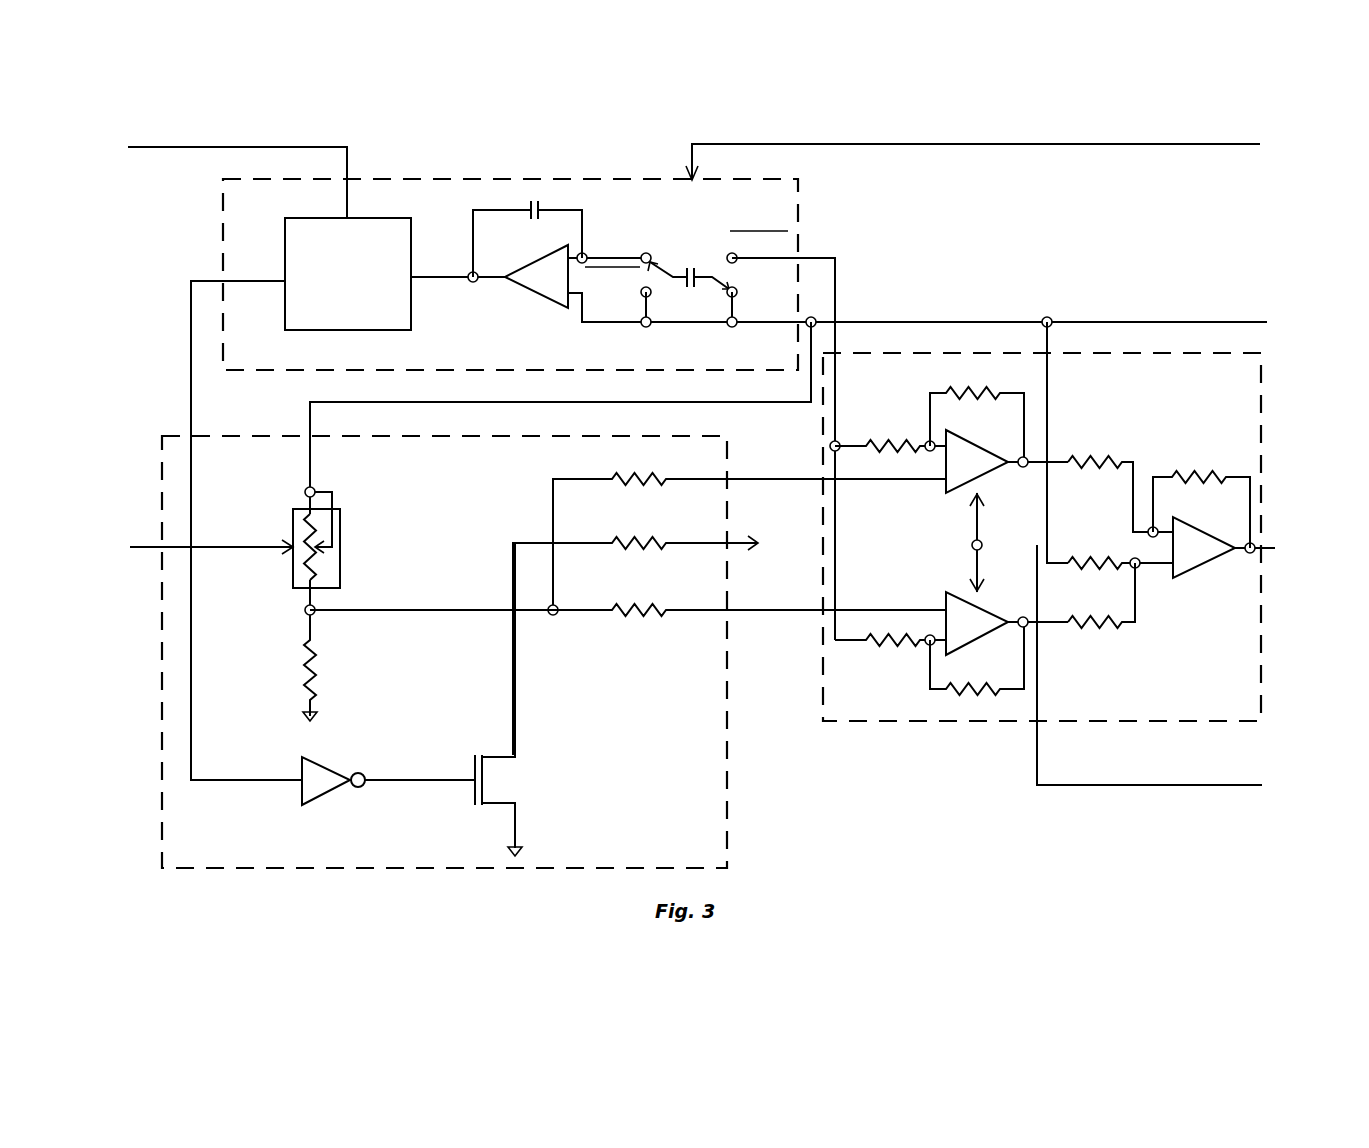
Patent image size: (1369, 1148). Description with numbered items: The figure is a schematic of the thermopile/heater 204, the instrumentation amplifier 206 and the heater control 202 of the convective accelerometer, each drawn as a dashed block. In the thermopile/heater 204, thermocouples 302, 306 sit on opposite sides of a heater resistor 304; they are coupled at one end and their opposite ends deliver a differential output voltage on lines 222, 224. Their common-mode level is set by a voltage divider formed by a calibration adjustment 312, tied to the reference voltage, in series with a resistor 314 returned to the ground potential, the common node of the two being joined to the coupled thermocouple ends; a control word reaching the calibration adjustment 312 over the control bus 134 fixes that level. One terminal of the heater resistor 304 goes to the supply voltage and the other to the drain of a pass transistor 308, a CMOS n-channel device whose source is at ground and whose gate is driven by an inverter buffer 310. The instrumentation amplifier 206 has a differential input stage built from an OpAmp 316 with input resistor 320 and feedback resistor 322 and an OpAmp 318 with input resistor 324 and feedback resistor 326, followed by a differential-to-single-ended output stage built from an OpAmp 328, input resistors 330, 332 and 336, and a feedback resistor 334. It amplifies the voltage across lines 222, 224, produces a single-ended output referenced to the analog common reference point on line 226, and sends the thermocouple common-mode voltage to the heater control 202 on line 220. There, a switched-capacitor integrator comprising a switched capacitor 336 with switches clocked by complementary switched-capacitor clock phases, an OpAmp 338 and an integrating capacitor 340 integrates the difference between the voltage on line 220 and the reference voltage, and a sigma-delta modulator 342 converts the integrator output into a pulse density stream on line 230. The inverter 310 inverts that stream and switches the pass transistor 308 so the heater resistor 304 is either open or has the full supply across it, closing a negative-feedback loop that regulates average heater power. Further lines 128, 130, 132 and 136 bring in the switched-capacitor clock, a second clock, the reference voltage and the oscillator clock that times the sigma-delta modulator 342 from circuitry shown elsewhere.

The line 128 (Ck_sc) 128 is at (1014, 157).
The line 130 (Ck_ca) 130 is at (1191, 692).
The line 132 (Vbs) 132 is at (1079, 332).
The control bus 134 is at (177, 562).
The line 136 (Ck_osc) 136 is at (204, 171).
The heater control circuit 202 is at (445, 172).
The thermopile/heater 204 is at (747, 833).
The instrumentation amplifier 206 is at (977, 722).
The line 220 is at (835, 297).
The line 222 is at (800, 479).
The line 224 is at (800, 610).
The line 226 is at (1289, 576).
The line 230 is at (190, 388).
The thermocouple 302 is at (747, 533).
The heater resistor 304 is at (656, 636).
The thermocouple 306 is at (628, 600).
The pass transistor 308 is at (523, 702).
The inverter buffer 310 is at (325, 795).
The calibration adjustment 312 is at (340, 580).
The resistor 314 is at (343, 668).
The operational amplifier 316 is at (995, 473).
The operational amplifier 318 is at (995, 634).
The input resistor 320 is at (890, 436).
The feedback resistor 322 is at (977, 414).
The input resistor 324 is at (890, 630).
The feedback resistor 326 is at (977, 658).
The operational amplifier 328 is at (1223, 559).
The input resistor 330 is at (1120, 487).
The input resistor 332 is at (1101, 595).
The feedback resistor 334 is at (1201, 500).
The switched capacitor 336 is at (879, 400).
The operational amplifier 338 is at (560, 286).
The integrating capacitor 340 is at (527, 239).
The sigma-delta modulator 342 is at (331, 324).